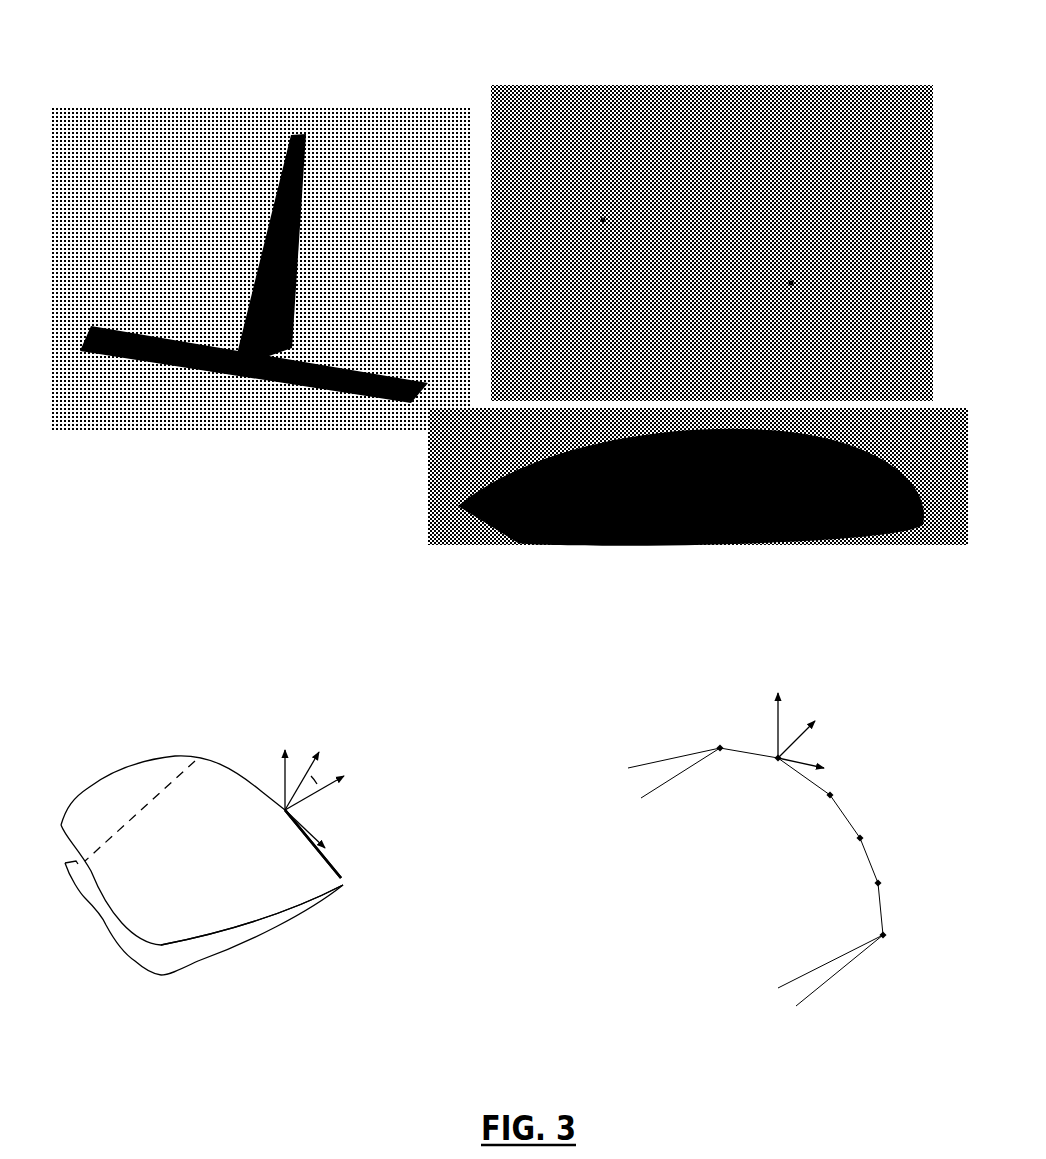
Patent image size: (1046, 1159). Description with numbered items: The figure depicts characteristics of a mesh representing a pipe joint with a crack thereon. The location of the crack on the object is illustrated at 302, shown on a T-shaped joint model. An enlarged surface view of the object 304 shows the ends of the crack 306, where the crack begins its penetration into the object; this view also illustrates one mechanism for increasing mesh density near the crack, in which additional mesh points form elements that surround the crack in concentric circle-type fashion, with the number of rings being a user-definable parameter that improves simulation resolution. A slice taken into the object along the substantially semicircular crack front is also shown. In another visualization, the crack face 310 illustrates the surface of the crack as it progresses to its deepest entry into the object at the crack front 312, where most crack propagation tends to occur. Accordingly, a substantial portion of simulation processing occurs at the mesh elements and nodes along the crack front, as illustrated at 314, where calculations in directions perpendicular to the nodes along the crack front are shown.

The crack location on the object 302 is at (230, 367).
The enlarged surface view of the object 304 is at (626, 52).
The ends of the crack 306 is at (783, 275).
The crack face 310 is at (190, 934).
The crack front 312 is at (343, 866).
The crack front nodes and normal-direction calculations 314 is at (690, 698).